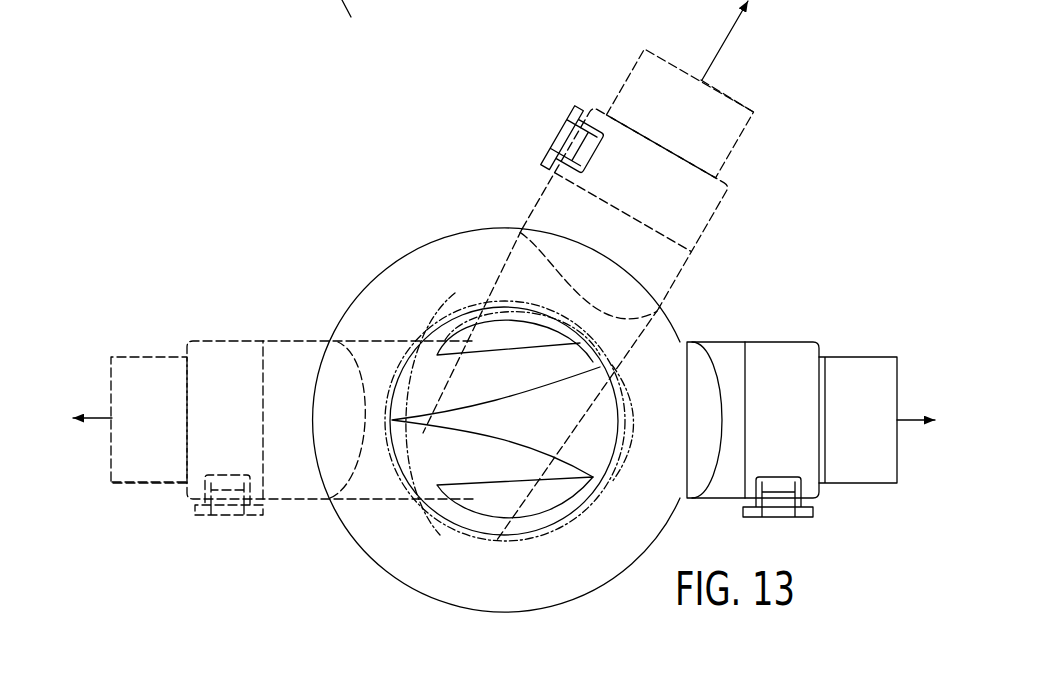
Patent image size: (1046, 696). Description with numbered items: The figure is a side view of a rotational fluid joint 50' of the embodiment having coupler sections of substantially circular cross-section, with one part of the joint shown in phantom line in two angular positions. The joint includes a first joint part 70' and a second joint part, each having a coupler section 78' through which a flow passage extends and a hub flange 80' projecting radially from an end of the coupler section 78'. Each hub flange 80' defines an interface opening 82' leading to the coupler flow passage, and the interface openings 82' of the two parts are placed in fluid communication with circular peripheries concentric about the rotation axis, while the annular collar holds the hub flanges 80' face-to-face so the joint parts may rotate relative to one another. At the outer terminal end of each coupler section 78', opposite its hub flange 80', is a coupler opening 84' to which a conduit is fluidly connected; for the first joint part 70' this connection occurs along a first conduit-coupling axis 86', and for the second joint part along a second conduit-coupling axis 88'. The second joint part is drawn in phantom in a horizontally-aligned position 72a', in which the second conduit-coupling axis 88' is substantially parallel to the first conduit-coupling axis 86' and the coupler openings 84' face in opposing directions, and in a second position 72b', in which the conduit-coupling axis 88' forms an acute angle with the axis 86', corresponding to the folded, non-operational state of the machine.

The rotational fluid joint 50' is at (785, 236).
The first joint part 70' is at (858, 386).
The horizontally-aligned position of second joint part 72a' is at (147, 527).
The folded position of second joint part 72b' is at (769, 88).
The coupler section 78' is at (465, 275).
The hub flange 80' is at (496, 420).
The interface opening 82' is at (522, 385).
The coupler opening 84' is at (353, 22).
The first conduit-coupling axis 86' is at (916, 390).
The second conduit-coupling axis 88' is at (410, 209).